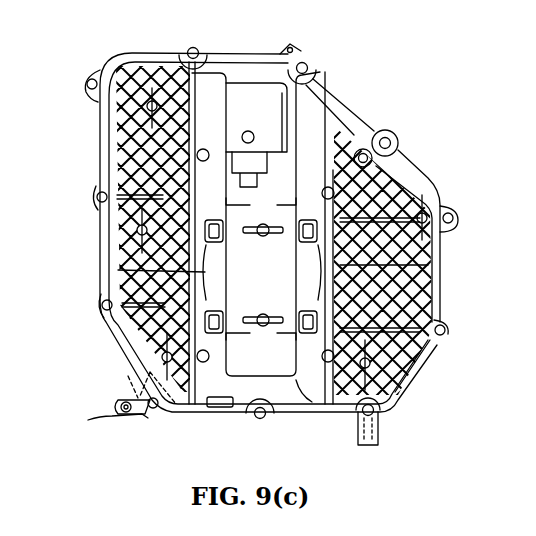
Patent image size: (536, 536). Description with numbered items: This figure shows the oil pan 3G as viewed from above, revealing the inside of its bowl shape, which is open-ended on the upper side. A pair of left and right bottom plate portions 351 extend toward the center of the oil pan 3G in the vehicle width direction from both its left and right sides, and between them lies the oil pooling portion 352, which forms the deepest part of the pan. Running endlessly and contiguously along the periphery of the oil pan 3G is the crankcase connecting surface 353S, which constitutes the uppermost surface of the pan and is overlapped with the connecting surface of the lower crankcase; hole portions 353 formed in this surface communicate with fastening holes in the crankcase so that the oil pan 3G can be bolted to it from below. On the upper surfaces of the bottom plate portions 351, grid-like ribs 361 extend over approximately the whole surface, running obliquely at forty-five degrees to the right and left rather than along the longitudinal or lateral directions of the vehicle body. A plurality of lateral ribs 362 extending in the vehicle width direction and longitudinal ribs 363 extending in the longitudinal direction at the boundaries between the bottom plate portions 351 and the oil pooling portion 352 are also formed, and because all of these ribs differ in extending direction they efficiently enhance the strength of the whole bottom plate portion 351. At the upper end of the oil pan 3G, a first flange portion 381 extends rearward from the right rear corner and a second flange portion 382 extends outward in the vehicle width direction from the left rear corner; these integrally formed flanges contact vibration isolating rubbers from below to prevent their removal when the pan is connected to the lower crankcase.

The oil pan 3G is at (418, 88).
The bottom plate portions 351 is at (120, 143).
The oil pooling portion 352 is at (285, 170).
The hole portions 353 is at (193, 46).
The crankcase connecting surface 353S is at (408, 377).
The grid-like ribs 361 is at (114, 166).
The lateral ribs 362 is at (118, 212).
The longitudinal ribs 363 is at (118, 270).
The first flange portion 381 is at (380, 440).
The second flange portion 382 is at (122, 411).